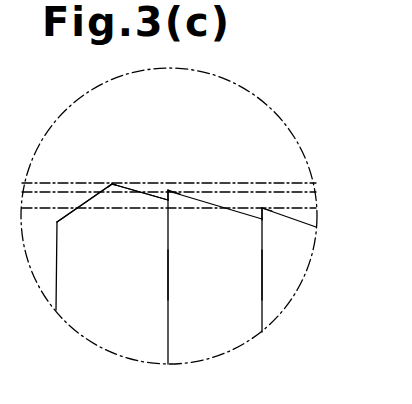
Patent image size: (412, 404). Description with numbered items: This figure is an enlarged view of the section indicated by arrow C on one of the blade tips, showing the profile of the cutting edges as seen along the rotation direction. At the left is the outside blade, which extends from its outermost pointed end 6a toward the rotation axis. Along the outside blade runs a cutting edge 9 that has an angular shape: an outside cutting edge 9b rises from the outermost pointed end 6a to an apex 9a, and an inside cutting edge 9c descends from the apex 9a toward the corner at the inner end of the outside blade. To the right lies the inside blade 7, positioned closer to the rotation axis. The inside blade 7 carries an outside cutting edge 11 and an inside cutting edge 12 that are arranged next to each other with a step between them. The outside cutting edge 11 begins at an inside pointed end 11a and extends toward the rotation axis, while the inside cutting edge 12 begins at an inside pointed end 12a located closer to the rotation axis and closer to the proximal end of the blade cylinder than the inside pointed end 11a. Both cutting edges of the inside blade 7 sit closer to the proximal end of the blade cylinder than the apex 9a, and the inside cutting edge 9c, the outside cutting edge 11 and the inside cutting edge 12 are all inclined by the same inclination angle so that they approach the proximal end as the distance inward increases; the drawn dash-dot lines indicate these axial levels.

The section indicated by arrow C is at (259, 101).
The outermost pointed end 6a is at (58, 225).
The cutting edge 9 is at (177, 134).
The apex 9a is at (112, 183).
The outside cutting edge 9b is at (80, 186).
The inside cutting edge 9c is at (155, 190).
The inside pointed end 11a is at (169, 190).
The outside cutting edge 11 is at (191, 204).
The inside pointed end 12a is at (263, 208).
The inside cutting edge 12 is at (291, 218).
The inside blade 7 is at (300, 264).